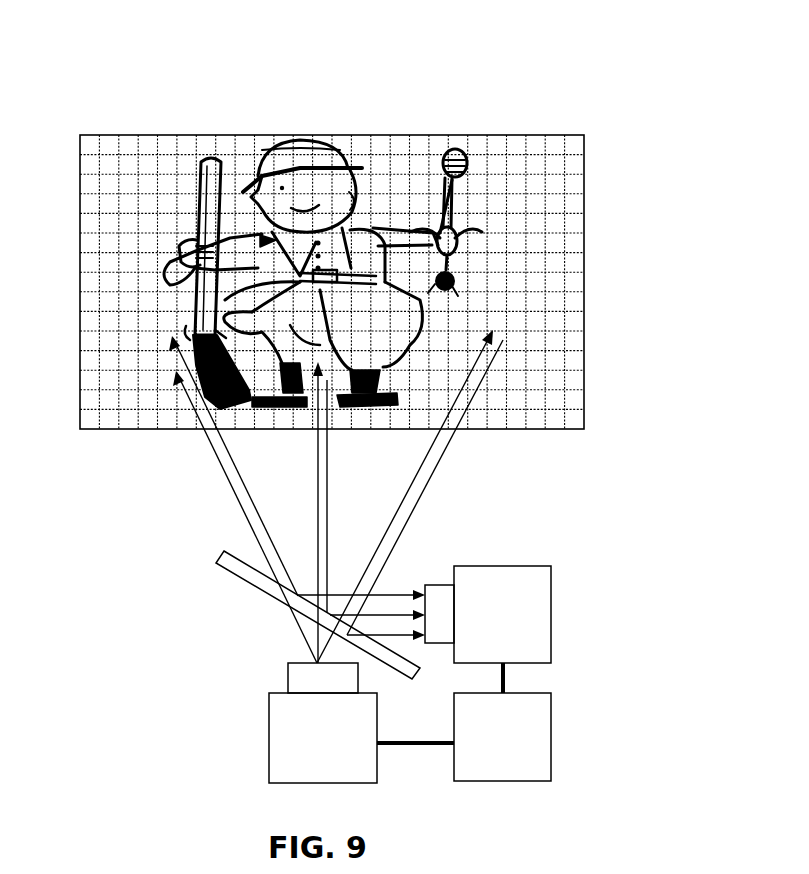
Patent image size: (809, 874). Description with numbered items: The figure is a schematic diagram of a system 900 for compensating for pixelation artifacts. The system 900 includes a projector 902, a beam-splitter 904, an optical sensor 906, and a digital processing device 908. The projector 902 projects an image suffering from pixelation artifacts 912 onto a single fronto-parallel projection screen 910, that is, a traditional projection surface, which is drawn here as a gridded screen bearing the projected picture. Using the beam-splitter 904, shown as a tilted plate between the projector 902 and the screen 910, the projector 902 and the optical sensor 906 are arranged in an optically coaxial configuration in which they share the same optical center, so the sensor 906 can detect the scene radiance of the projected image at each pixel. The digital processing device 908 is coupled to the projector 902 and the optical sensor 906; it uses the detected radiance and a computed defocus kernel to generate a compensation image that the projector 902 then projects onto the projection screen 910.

The system 900 is at (681, 57).
The projector 902 is at (269, 733).
The beam-splitter 904 is at (211, 556).
The optical sensor 906 is at (551, 653).
The digital processing device 908 is at (551, 743).
The projection screen 910 is at (585, 300).
The image suffering from pixelation artifacts 912 is at (565, 203).